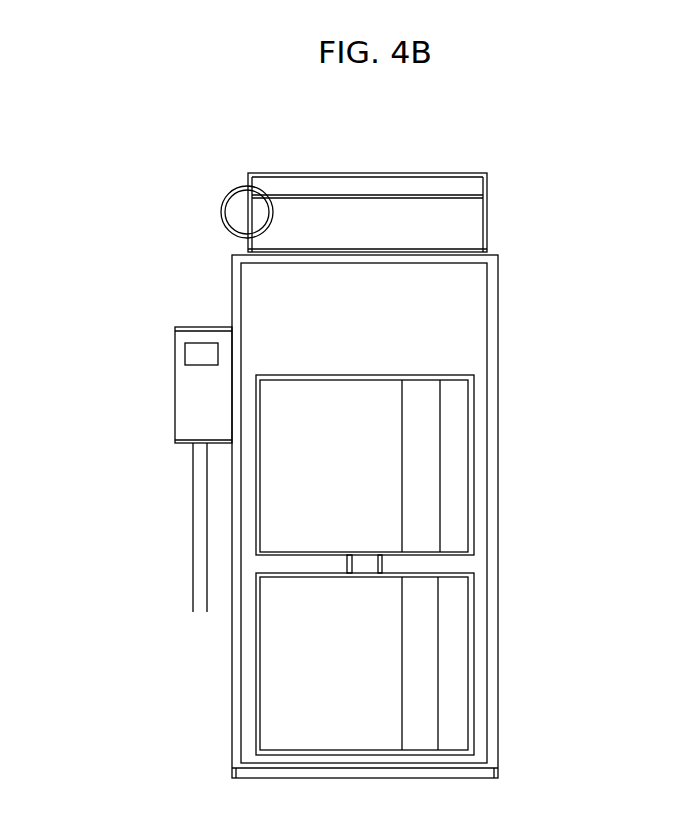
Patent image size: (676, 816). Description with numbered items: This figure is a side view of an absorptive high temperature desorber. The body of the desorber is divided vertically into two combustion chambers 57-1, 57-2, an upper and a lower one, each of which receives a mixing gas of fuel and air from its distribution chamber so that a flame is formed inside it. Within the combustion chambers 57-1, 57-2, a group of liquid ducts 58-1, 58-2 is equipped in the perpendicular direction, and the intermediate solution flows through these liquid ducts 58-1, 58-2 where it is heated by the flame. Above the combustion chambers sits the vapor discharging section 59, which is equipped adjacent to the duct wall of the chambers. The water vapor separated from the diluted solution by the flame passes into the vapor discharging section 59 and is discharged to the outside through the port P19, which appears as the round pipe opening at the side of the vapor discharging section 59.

The port P19 is at (223, 225).
The vapor discharging section 59 is at (486, 224).
The combustion chamber 57-1 is at (453, 431).
The liquid duct 58-1 is at (420, 498).
The combustion chamber 57-2 is at (457, 673).
The liquid duct 58-2 is at (420, 615).